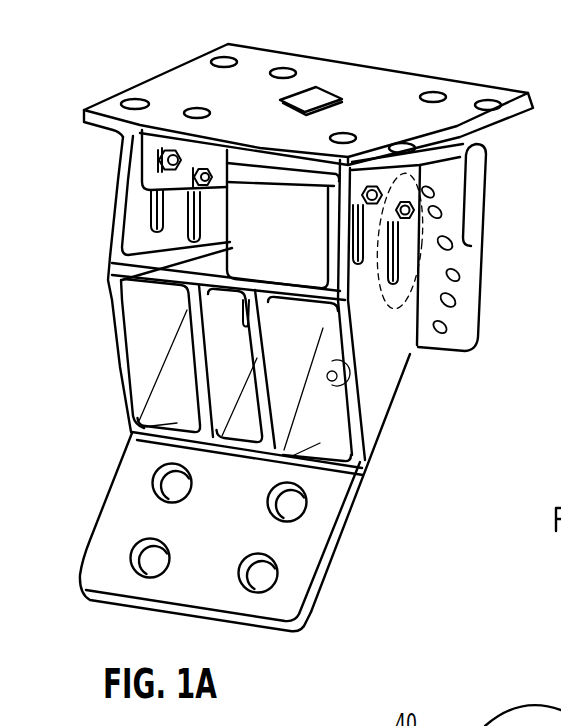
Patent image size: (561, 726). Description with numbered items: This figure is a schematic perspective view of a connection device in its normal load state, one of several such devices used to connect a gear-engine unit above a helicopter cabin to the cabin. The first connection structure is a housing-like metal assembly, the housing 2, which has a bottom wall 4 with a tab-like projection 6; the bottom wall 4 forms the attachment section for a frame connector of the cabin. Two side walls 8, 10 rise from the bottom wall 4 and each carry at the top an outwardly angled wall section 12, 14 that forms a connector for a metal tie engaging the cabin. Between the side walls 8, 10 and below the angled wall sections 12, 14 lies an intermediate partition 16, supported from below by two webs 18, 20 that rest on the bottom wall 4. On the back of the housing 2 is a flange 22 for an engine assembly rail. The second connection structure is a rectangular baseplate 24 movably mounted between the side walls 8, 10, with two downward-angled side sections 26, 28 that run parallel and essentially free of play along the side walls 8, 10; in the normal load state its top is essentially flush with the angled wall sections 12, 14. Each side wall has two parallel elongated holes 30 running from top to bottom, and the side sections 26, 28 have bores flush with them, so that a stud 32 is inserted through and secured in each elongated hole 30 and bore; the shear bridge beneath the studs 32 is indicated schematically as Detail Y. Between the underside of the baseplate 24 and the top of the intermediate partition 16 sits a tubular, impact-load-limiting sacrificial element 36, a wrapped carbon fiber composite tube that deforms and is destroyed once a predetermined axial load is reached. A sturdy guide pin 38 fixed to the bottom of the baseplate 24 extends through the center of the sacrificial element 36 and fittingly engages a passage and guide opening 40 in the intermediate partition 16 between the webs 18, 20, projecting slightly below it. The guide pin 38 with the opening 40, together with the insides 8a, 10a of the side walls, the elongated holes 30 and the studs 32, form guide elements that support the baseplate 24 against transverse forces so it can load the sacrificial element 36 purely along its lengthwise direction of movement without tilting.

The housing 2 is at (407, 387).
The bottom wall 4 is at (132, 433).
The tab-like projection 6 is at (88, 556).
The side wall 8 is at (118, 353).
The inside of side wall 8a is at (127, 237).
The side wall 10 is at (372, 420).
The inside of side wall 10a is at (322, 237).
The angled wall section 12 is at (168, 70).
The angled wall section 14 is at (507, 93).
The intermediate partition 16 is at (232, 272).
The web 18 is at (200, 357).
The web 20 is at (258, 345).
The flange 22 is at (462, 297).
The baseplate 24 is at (396, 84).
The side section 26 is at (153, 169).
The side section 28 is at (337, 213).
The elongated hole 30 is at (187, 231).
The stud 32 is at (197, 166).
The sacrificial element 36 is at (128, 278).
The guide pin 38 is at (242, 305).
The passage and guide opening 40 is at (236, 308).
The Detail Y is at (418, 263).